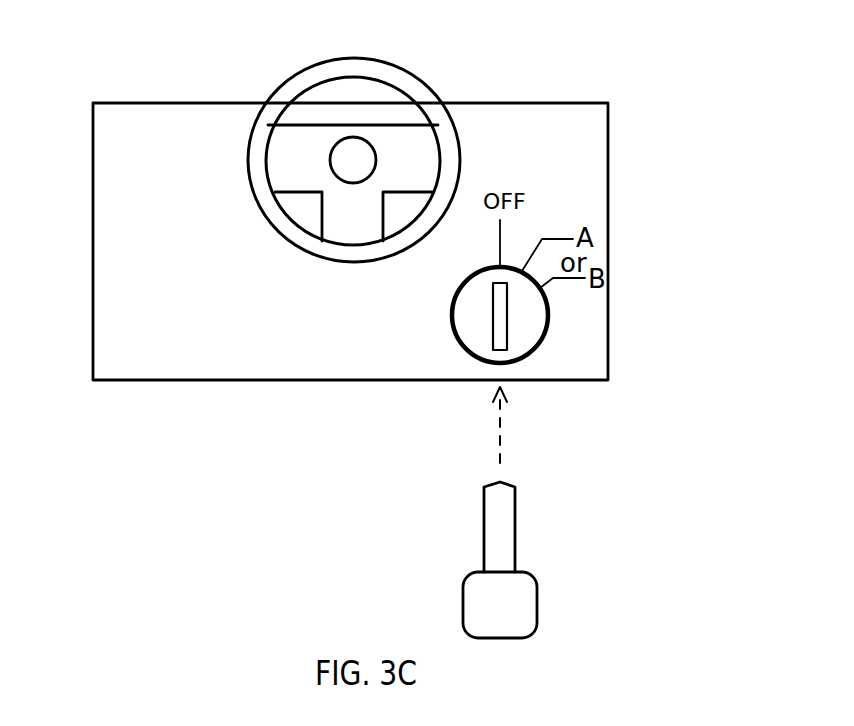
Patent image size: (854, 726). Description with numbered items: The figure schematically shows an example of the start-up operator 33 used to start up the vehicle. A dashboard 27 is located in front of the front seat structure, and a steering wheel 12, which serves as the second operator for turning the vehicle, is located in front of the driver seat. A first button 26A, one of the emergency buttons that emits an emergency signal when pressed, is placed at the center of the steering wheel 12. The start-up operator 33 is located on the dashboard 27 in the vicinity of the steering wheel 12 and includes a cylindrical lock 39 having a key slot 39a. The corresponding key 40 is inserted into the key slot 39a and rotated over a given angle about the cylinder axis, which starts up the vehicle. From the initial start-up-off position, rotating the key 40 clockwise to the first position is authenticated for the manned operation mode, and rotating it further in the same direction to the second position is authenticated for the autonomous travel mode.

The steering wheel 12 is at (382, 67).
The dashboard 27 is at (153, 113).
The first button 26A is at (347, 153).
The start-up operator 33 is at (508, 348).
The cylindrical lock 39 is at (549, 316).
The key slot 39a is at (498, 330).
The key 40 is at (526, 612).